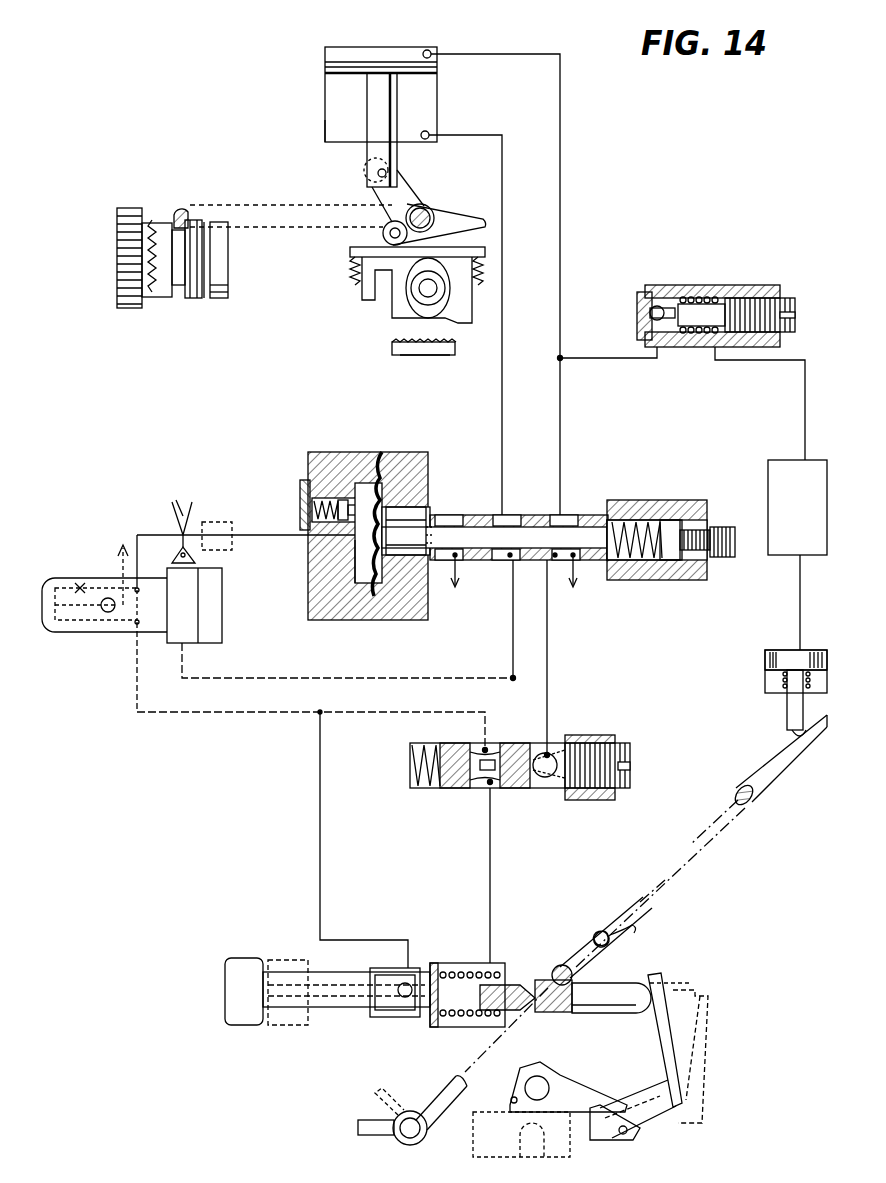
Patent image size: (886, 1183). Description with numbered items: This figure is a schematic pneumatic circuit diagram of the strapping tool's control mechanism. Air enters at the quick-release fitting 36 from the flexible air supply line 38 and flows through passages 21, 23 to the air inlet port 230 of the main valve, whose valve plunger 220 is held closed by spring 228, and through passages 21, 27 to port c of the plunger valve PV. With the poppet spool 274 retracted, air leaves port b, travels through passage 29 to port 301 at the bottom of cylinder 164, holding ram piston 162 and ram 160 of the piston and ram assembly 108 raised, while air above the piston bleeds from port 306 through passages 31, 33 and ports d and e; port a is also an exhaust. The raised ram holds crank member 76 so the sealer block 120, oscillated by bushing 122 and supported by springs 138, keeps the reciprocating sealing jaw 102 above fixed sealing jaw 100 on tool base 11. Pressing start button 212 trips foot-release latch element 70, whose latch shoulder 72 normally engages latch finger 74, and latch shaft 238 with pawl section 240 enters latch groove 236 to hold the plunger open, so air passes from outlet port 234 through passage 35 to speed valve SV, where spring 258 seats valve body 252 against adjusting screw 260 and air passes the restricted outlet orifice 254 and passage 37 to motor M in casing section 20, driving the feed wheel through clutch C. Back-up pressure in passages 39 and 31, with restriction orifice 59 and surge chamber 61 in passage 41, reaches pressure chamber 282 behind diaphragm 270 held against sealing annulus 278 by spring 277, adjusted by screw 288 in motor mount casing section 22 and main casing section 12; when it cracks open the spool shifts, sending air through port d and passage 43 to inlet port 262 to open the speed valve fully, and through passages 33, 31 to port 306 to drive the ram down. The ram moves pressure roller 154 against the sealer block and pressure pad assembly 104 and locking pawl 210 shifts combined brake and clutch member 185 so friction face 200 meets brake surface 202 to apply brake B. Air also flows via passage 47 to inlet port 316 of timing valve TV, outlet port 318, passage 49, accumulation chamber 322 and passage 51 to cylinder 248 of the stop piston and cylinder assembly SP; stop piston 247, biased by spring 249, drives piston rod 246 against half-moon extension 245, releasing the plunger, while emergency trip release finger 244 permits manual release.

The piston and ram assembly 108 is at (310, 90).
The ram piston 162 is at (363, 74).
The ram 160 is at (392, 108).
The cylinder 164 is at (322, 116).
The port 306 is at (428, 50).
The port 301 is at (429, 132).
The passage 29 is at (504, 180).
The passage 31 is at (562, 180).
The crank member 76 is at (428, 190).
The locking pawl 210 is at (432, 208).
The pressure roller 154 is at (383, 236).
The latch finger 74 is at (486, 222).
The sealer block and pressure pad assembly 104 is at (478, 244).
The supporting springs 138 is at (350, 280).
The sealer block 120 is at (392, 310).
The bushing 122 is at (446, 298).
The fixed sealing jaw 100 is at (392, 342).
The reciprocating sealing jaw 102 is at (448, 336).
The tool base 11 is at (440, 356).
The friction face 200 is at (205, 222).
The brake surface 202 is at (215, 298).
The combined brake and clutch member 185 is at (193, 275).
The passage 47 is at (575, 360).
The passage 49 is at (805, 420).
The passage 51 is at (802, 592).
The passage 33 is at (561, 440).
The air inlet port 316 is at (650, 300).
The air outlet port 318 is at (700, 330).
The accumulation chamber 322 is at (827, 520).
The diaphragm 270 is at (405, 480).
The poppet spool 274 is at (408, 520).
The spring 277 is at (626, 500).
The adjusting screw 288 is at (718, 560).
The sealing annulus 278 is at (312, 548).
The pressure chamber 282 is at (320, 565).
The passage 41 is at (288, 535).
The quick-release fitting 36 is at (160, 535).
The flexible air supply line 38 is at (176, 506).
The surge chamber 61 is at (212, 522).
The restriction orifice 59 is at (80, 586).
The main casing section 12 is at (222, 612).
The casing section 20 is at (74, 632).
The internal air feed passage 39 is at (108, 652).
The motor mount casing section 22 is at (178, 625).
The passage 21 is at (220, 680).
The passage 27 is at (380, 682).
The passage 37 is at (352, 716).
The passage 43 is at (549, 682).
The passage 23 is at (322, 842).
The passage 35 is at (494, 870).
The valve body 252 is at (486, 754).
The air inlet port 262 is at (552, 756).
The adjusting screw 260 is at (632, 756).
The spring 258 is at (424, 788).
The outlet orifice 254 is at (482, 790).
The cylinder 248 is at (766, 668).
The spring 249 is at (783, 684).
The piston rod 246 is at (788, 710).
The stop piston 247 is at (812, 668).
The half-moon extension 245 is at (806, 734).
The latch shaft 238 is at (760, 798).
The start button 212 is at (240, 1026).
The valve plunger 220 is at (345, 1010).
The air inlet port 230 is at (405, 998).
The spring 228 is at (462, 960).
The air outlet port 234 is at (505, 985).
The latch groove 236 is at (536, 1012).
The pawl section 240 is at (590, 972).
The foot-release latch element 70 is at (662, 972).
The latch shoulder 72 is at (598, 1140).
The emergency trip release finger 244 is at (370, 1135).
The timing valve TV is at (812, 292).
The relief valve RV is at (342, 490).
The plunger valve PV is at (395, 462).
The speed valve SV is at (408, 745).
The stop piston and cylinder assembly SP is at (818, 628).
The air-operated motor M is at (104, 598).
The brake B is at (228, 285).
The clutch C is at (160, 290).
The exhaust port a is at (461, 580).
The port c is at (506, 566).
The port d is at (549, 566).
The exhaust port e is at (581, 580).